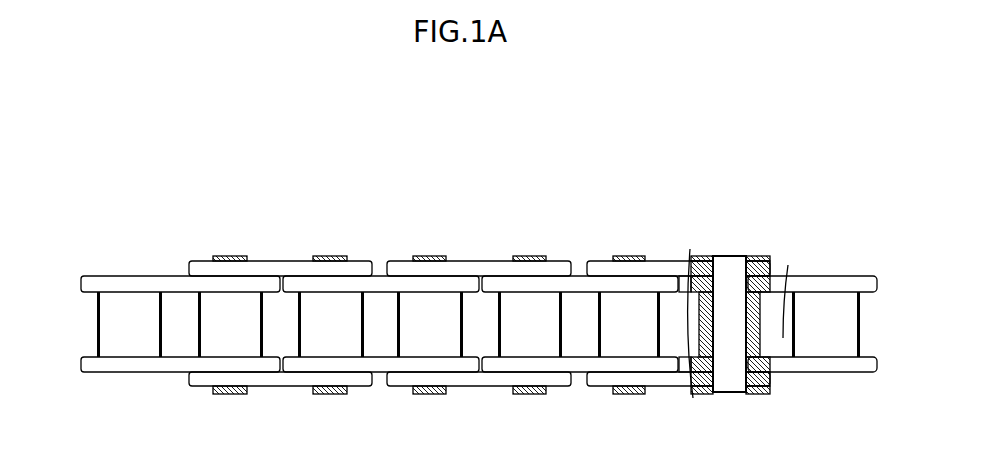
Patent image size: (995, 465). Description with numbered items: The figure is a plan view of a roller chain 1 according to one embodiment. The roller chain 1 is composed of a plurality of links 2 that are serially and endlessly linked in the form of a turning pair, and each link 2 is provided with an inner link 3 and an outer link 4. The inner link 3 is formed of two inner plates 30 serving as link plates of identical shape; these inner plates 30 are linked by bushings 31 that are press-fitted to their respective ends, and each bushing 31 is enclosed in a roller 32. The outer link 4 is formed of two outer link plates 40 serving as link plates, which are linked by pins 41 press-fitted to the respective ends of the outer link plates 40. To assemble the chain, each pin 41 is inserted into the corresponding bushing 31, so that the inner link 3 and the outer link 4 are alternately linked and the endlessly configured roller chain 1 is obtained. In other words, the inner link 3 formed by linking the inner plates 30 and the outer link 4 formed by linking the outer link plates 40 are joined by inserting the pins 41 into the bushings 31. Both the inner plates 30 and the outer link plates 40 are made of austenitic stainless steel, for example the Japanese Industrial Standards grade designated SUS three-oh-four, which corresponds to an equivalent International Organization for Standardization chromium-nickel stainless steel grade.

The roller chain 1 is at (616, 176).
The link 2 is at (427, 193).
The inner link 3 is at (376, 254).
The outer link 4 is at (479, 215).
The inner plate 30 is at (831, 277).
The bushing 31 is at (755, 315).
The roller 32 is at (765, 340).
The outer link plate 40 is at (652, 262).
The pin 41 is at (726, 258).